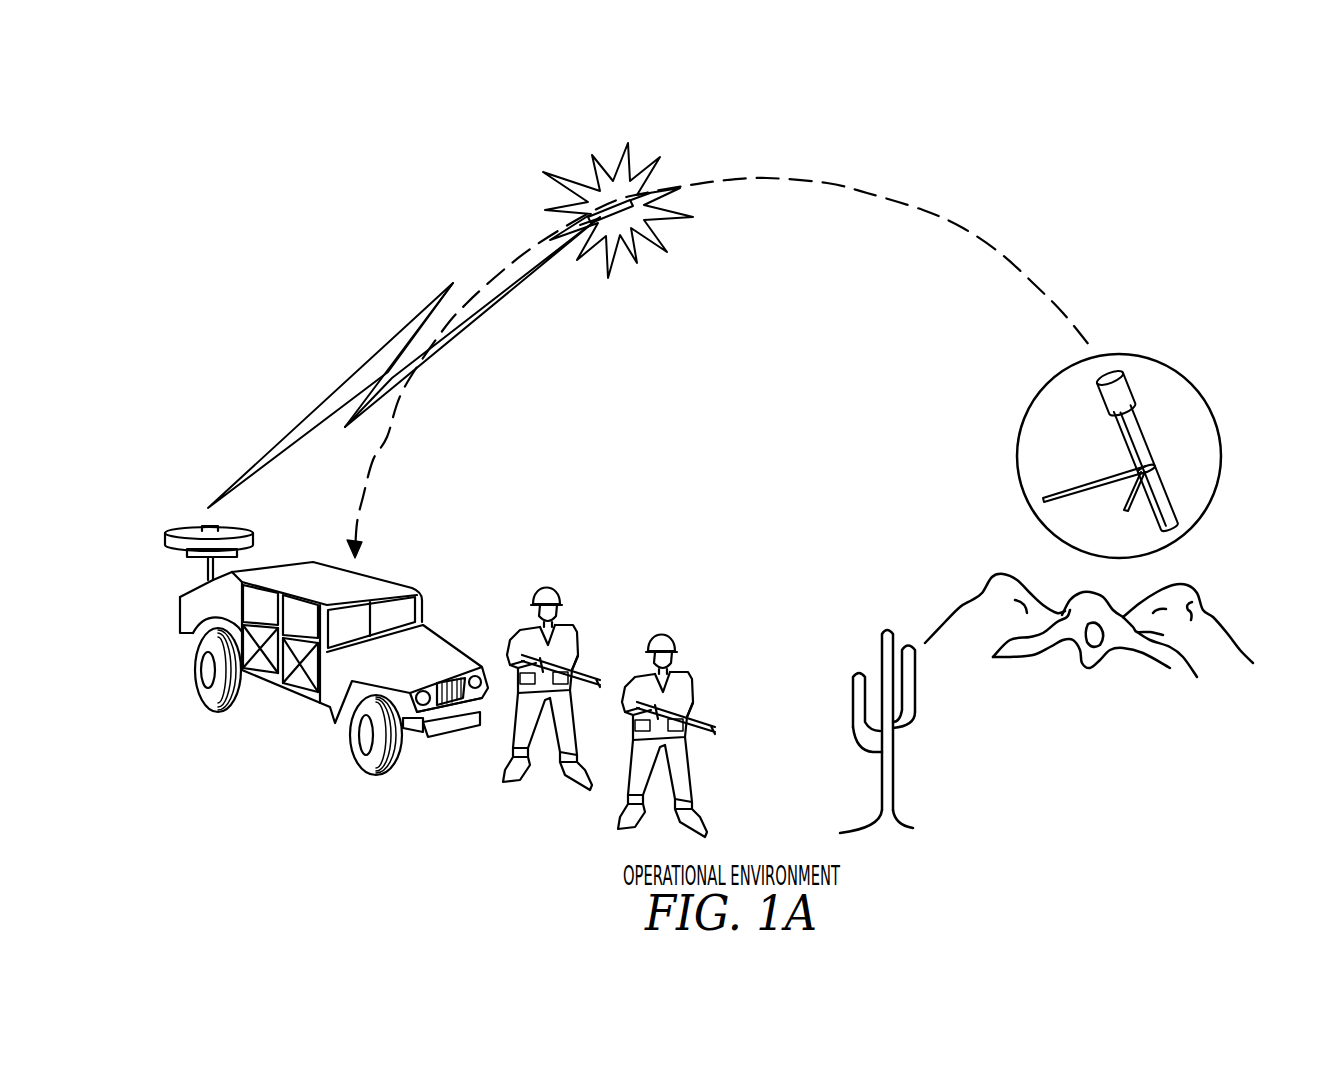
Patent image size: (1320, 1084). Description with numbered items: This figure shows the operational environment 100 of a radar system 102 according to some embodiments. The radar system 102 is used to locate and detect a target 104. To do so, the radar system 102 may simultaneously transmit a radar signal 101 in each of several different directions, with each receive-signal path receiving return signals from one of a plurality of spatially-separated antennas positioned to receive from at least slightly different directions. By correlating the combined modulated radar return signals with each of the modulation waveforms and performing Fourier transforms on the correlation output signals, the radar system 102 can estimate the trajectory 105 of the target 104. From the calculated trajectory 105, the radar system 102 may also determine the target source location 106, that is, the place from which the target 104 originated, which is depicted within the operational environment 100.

The operational environment 100 is at (1124, 147).
The radar signal 101 is at (372, 358).
The radar system 102 is at (172, 542).
The target 104 is at (613, 190).
The trajectory 105 is at (798, 183).
The target source location 106 is at (1205, 442).